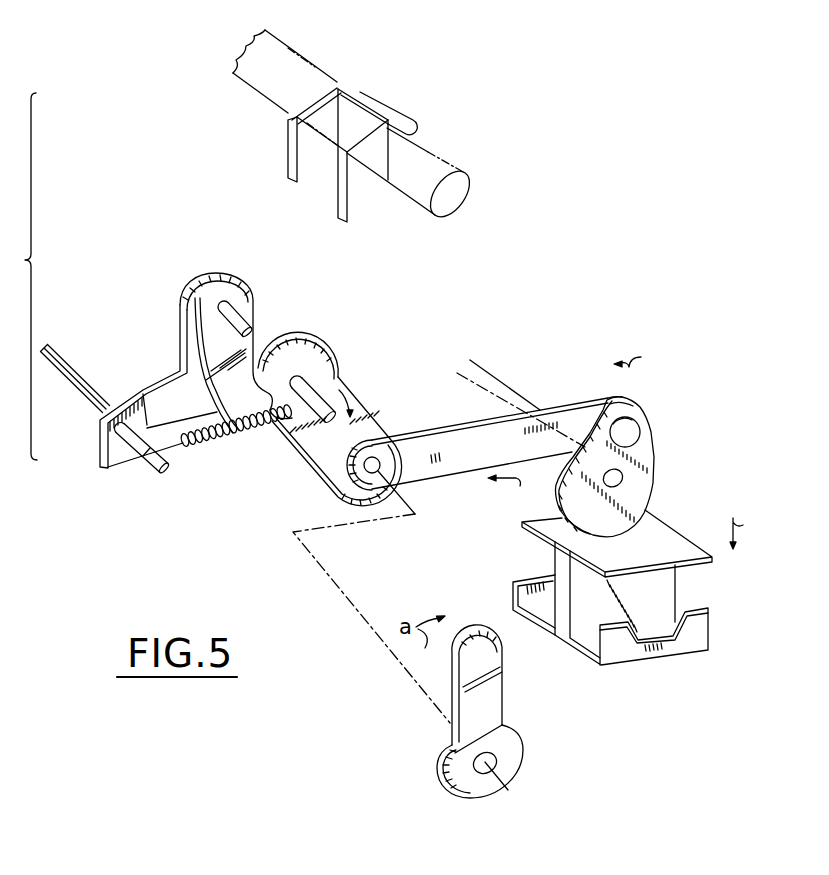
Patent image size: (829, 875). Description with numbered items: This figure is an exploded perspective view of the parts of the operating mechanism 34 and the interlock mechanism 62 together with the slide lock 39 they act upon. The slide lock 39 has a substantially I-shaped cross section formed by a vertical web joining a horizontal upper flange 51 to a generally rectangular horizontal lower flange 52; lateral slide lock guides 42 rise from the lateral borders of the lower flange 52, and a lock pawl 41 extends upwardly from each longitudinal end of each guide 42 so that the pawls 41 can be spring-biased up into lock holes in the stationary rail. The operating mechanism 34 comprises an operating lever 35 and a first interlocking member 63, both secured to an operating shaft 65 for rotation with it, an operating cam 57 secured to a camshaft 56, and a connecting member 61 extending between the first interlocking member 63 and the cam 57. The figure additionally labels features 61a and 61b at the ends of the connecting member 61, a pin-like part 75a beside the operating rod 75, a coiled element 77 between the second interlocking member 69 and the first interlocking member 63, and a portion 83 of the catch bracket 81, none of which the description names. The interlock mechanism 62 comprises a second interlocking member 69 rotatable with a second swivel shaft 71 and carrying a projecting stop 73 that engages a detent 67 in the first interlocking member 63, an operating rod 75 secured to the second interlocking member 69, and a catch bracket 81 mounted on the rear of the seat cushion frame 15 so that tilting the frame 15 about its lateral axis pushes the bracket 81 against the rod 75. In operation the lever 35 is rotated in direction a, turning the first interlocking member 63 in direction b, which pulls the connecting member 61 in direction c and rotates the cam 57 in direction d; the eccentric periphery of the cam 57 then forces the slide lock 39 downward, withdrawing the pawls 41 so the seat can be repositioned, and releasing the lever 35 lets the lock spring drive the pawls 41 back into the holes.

The seat cushion frame 15 is at (437, 162).
The operating mechanism 34 is at (574, 338).
The operating lever 35 is at (490, 690).
The slide lock 39 is at (600, 601).
The lock pawl 41 is at (523, 596).
The lateral slide lock guide 42 is at (693, 647).
The horizontal upper flange 51 is at (687, 543).
The horizontal lower flange 52 is at (532, 623).
The camshaft 56 is at (494, 377).
The operating cam 57 is at (651, 437).
The connecting member 61 is at (468, 463).
The link end 61a is at (577, 408).
The link pivot hole 61b is at (373, 474).
The interlock mechanism 62 is at (354, 301).
The first interlocking member 63 is at (328, 470).
The operating shaft 65 is at (322, 395).
The detent 67 is at (293, 345).
The second interlocking member 69 is at (200, 312).
The second swivel shaft 71 is at (240, 318).
The projecting stop 73 is at (262, 428).
The operating rod 75 is at (93, 402).
The pin 75a is at (169, 472).
The spring 77 is at (212, 442).
The catch bracket 81 is at (364, 203).
The clip flange 83 is at (414, 122).